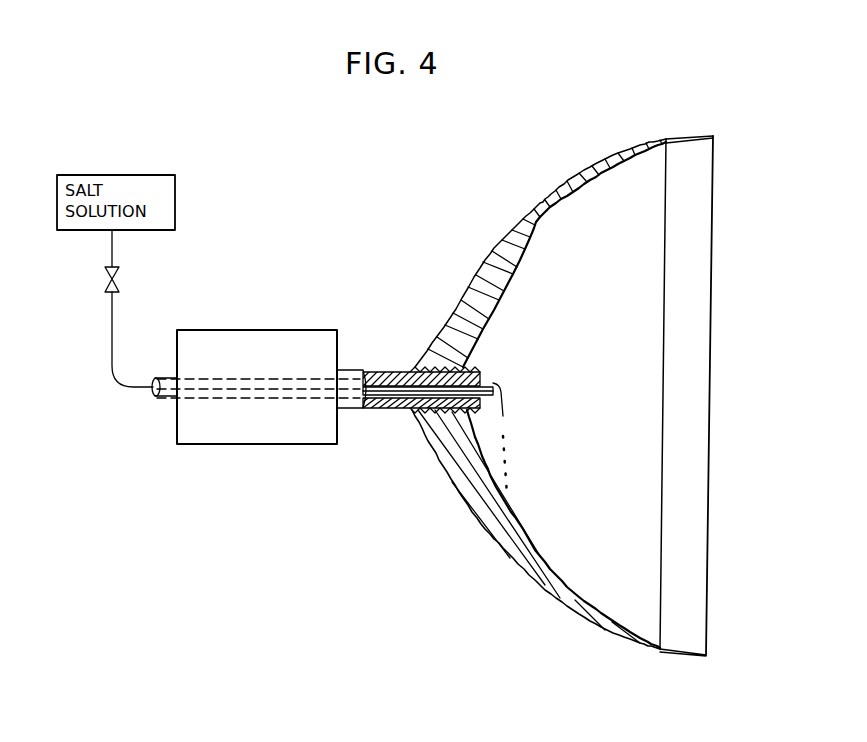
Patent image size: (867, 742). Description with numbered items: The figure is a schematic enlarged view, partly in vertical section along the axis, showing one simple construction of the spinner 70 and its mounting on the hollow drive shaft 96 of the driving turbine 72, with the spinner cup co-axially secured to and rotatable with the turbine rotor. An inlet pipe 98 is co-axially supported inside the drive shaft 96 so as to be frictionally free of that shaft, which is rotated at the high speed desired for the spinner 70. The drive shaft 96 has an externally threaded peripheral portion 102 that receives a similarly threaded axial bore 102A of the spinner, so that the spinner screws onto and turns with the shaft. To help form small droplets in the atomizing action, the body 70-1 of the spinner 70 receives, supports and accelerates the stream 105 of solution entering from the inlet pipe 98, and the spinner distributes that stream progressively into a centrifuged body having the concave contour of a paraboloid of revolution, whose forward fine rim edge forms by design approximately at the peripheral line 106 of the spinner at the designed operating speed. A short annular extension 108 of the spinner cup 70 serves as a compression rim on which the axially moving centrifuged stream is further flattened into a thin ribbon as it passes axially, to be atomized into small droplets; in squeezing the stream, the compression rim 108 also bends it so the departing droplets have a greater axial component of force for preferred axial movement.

The spinner 70 is at (520, 208).
The body of the spinner 70-1 is at (482, 258).
The driving turbine 72 is at (212, 338).
The hollow drive shaft 96 is at (395, 372).
The inlet pipe 98 is at (165, 397).
The externally threaded peripheral portion 102 is at (410, 401).
The threaded axial bore 102A is at (432, 411).
The stream of solution 105 is at (503, 417).
The peripheral line 106 is at (665, 138).
The annular extension 108 is at (700, 136).